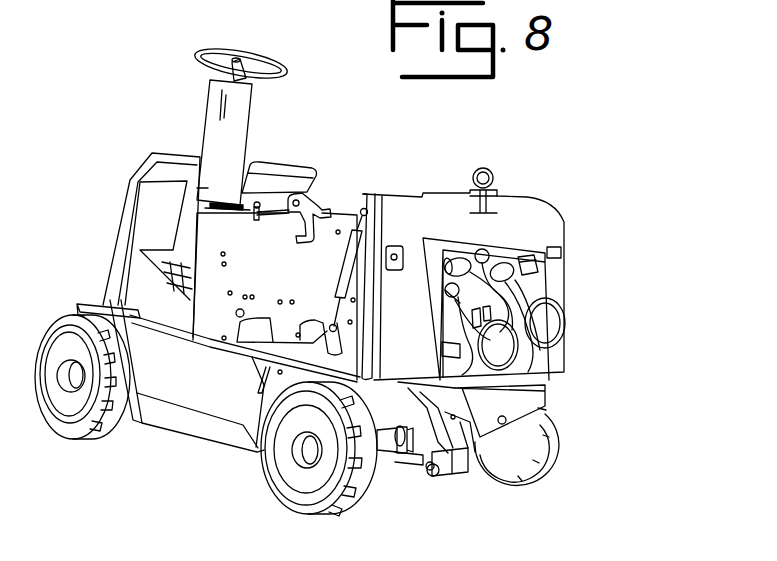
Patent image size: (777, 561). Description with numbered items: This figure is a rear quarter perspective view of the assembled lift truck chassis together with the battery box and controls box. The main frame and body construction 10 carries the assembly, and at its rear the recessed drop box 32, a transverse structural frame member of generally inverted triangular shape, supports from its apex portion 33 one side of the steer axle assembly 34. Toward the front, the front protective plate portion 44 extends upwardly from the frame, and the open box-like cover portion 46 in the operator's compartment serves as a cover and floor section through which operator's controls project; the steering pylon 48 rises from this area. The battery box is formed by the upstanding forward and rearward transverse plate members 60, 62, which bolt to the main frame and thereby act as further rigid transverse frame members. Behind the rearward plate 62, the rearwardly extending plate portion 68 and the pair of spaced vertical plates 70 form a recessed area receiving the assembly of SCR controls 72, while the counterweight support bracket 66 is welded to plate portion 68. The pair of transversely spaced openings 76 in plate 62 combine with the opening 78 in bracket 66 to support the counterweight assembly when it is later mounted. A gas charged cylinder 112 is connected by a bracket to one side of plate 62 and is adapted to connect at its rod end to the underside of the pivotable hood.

The main frame and body construction 10 is at (223, 392).
The recessed drop box 32 is at (448, 425).
The apex portion 33 is at (457, 465).
The steer axle assembly 34 is at (428, 466).
The front protective plate portion 44 is at (172, 221).
The open box-like cover portion 46 is at (168, 309).
The steering pylon 48 is at (242, 131).
The forward transverse plate member 60 is at (310, 286).
The rearward transverse plate member 62 is at (532, 223).
The counterweight support bracket 66 is at (527, 404).
The rearwardly extending plate portion 68 is at (522, 361).
The vertical plates 70 is at (440, 289).
The SCR controls 72 is at (507, 303).
The transversely spaced openings 76 is at (392, 246).
The opening 78 is at (507, 421).
The gas charged cylinder 112 is at (350, 247).